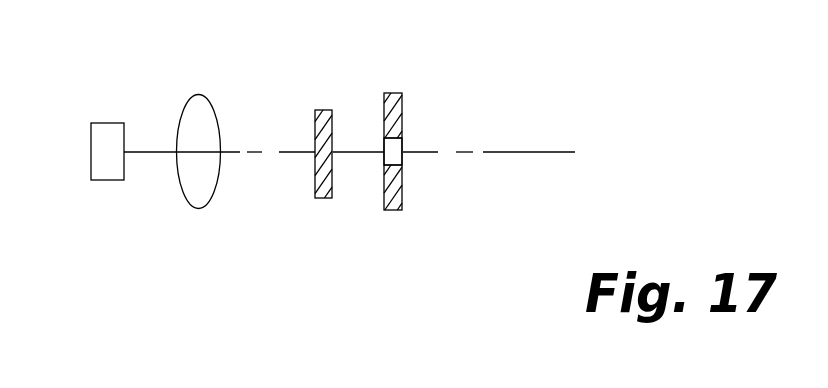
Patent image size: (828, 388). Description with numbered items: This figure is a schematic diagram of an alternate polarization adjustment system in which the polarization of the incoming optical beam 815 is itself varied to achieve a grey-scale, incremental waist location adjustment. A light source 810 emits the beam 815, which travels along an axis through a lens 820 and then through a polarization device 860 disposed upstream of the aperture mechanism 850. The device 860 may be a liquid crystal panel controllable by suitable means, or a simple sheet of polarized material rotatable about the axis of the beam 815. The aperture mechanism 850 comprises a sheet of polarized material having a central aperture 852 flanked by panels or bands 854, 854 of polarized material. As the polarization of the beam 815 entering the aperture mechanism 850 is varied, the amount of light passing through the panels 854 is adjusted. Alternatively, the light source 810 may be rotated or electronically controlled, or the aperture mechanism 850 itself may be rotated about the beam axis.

The light source 810 is at (100, 175).
The lens 820 is at (197, 208).
The polarization device 860 is at (328, 110).
The incoming optical beam 815 is at (368, 152).
The aperture mechanism 850 is at (401, 159).
The central aperture 852 is at (397, 145).
The panels or bands 854 is at (393, 103).